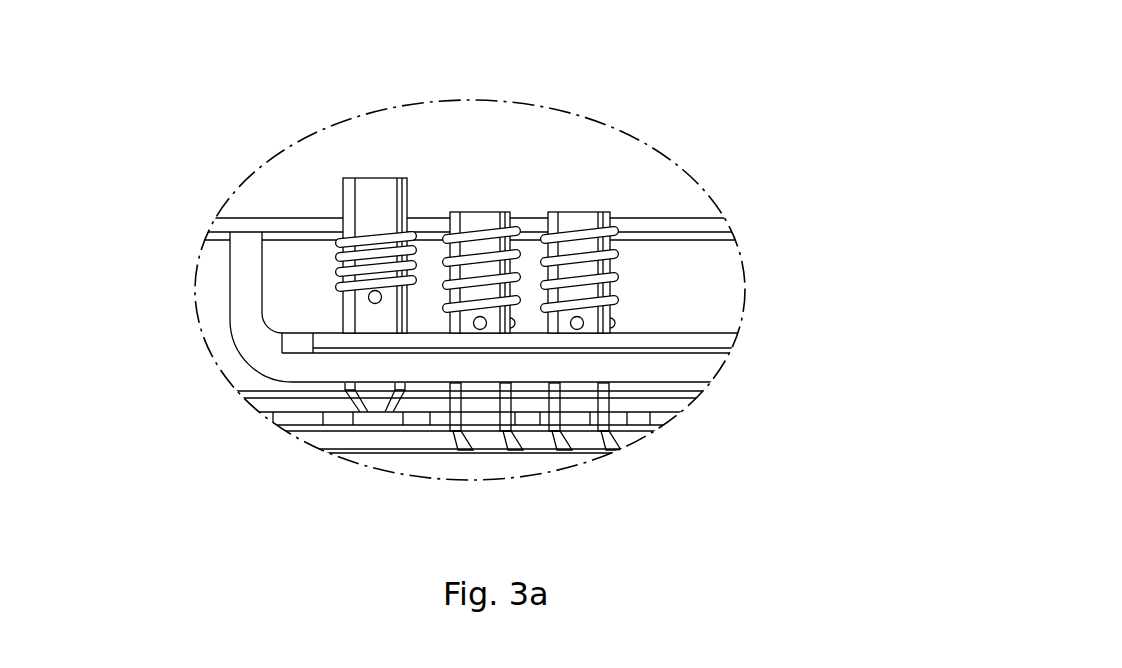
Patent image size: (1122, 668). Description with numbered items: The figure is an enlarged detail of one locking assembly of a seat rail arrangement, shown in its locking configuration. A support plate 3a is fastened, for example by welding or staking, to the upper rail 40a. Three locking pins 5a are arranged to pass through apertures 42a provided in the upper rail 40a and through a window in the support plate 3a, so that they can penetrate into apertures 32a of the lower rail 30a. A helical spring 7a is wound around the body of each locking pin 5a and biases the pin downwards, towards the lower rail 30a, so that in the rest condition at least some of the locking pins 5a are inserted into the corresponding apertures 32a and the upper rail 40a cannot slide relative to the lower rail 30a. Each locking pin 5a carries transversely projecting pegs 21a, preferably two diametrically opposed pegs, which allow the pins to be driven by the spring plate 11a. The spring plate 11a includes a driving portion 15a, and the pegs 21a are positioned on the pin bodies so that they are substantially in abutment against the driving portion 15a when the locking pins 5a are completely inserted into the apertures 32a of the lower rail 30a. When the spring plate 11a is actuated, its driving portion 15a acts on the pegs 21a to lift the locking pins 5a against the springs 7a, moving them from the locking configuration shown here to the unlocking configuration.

The upper rail 40a is at (247, 218).
The aperture 42a is at (353, 217).
The locking pin 5a is at (500, 258).
The helical spring 7a is at (617, 278).
The transversely projecting peg 21a is at (582, 321).
The driving portion 15a is at (720, 342).
The support plate 3a is at (687, 370).
The spring plate 11a is at (655, 366).
The lower rail 30a is at (375, 450).
The aperture 32a is at (560, 423).